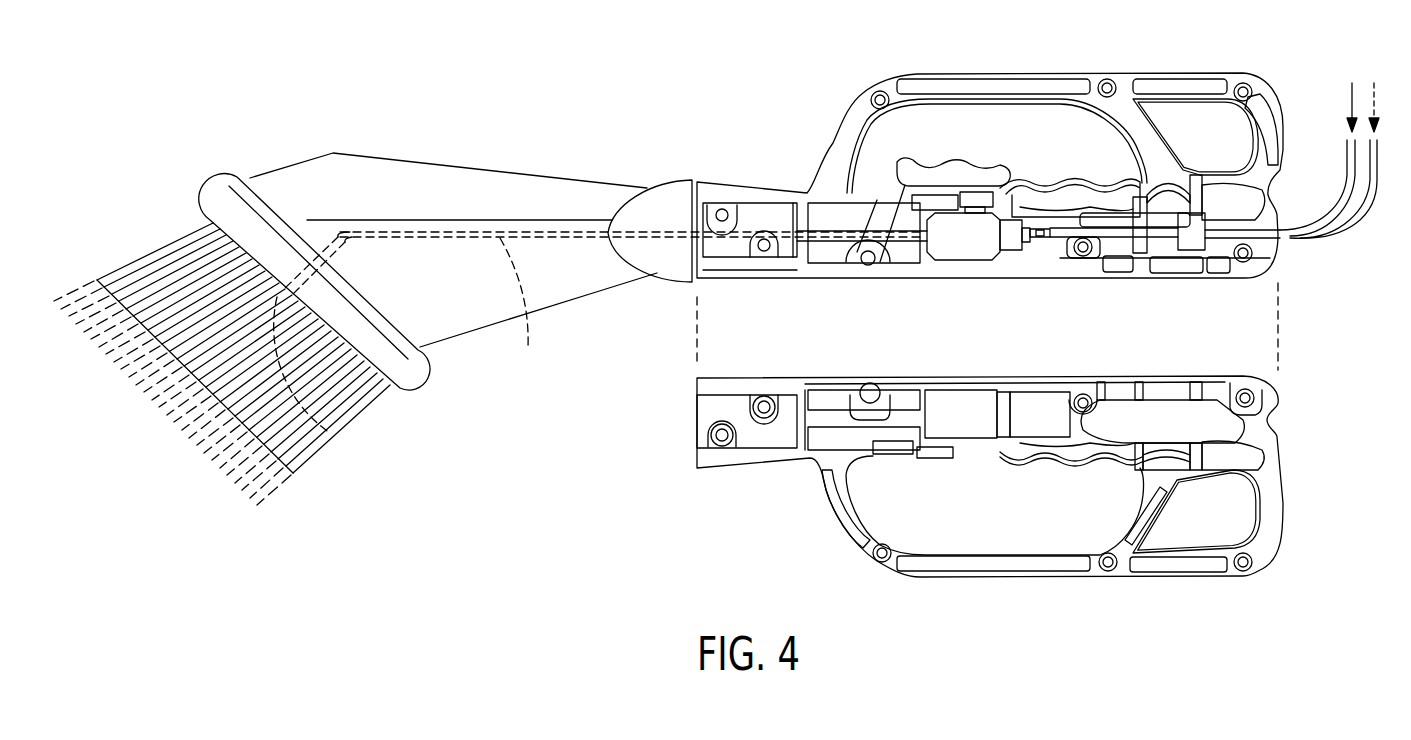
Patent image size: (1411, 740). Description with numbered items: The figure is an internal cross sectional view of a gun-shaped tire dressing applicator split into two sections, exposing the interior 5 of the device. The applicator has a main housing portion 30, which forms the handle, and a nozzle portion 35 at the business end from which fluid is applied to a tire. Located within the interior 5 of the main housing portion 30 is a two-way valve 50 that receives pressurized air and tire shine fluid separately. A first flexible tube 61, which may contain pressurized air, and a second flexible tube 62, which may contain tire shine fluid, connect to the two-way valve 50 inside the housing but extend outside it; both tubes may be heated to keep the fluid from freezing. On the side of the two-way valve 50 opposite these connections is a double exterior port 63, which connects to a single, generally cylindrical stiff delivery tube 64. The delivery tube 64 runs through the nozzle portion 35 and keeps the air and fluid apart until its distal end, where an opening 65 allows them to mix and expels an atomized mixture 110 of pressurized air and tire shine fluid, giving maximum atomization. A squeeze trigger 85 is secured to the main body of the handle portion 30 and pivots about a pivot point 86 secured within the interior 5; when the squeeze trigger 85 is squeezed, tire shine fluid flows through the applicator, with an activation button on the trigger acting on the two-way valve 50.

The interior 5 is at (833, 217).
The main housing portion 30 is at (864, 96).
The nozzle portion 35 is at (487, 170).
The two-way valve 50 is at (958, 240).
The first flexible tube 61 is at (1347, 197).
The second flexible tube 62 is at (1040, 238).
The double exterior port 63 is at (914, 250).
The generally cylindrical stiff delivery tube 64 is at (521, 307).
The opening 65 is at (333, 437).
The squeeze trigger 85 is at (998, 167).
The pivot point 86 is at (868, 266).
The atomized mixture 110 is at (267, 500).